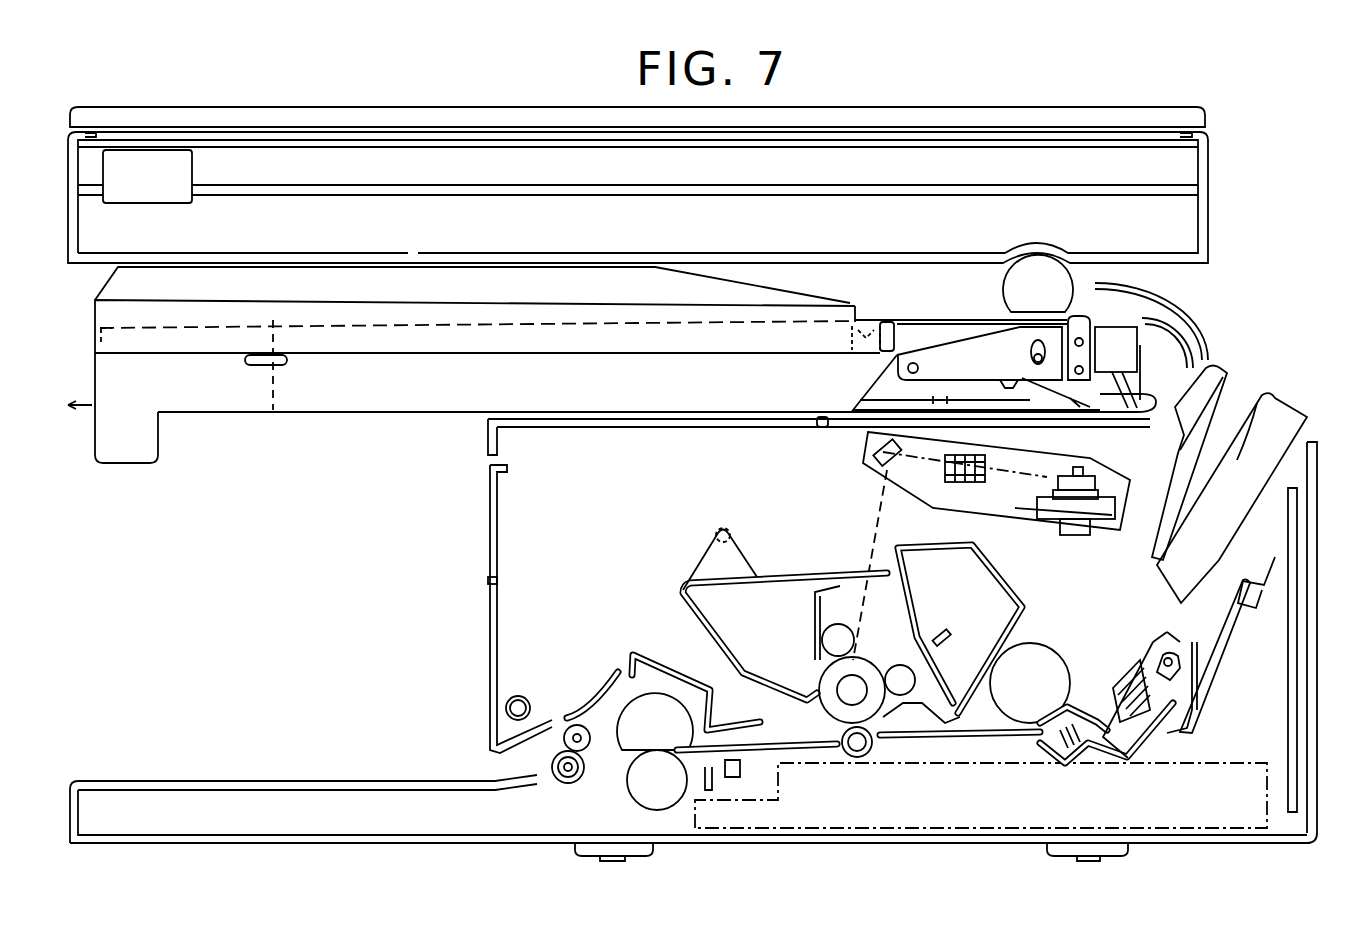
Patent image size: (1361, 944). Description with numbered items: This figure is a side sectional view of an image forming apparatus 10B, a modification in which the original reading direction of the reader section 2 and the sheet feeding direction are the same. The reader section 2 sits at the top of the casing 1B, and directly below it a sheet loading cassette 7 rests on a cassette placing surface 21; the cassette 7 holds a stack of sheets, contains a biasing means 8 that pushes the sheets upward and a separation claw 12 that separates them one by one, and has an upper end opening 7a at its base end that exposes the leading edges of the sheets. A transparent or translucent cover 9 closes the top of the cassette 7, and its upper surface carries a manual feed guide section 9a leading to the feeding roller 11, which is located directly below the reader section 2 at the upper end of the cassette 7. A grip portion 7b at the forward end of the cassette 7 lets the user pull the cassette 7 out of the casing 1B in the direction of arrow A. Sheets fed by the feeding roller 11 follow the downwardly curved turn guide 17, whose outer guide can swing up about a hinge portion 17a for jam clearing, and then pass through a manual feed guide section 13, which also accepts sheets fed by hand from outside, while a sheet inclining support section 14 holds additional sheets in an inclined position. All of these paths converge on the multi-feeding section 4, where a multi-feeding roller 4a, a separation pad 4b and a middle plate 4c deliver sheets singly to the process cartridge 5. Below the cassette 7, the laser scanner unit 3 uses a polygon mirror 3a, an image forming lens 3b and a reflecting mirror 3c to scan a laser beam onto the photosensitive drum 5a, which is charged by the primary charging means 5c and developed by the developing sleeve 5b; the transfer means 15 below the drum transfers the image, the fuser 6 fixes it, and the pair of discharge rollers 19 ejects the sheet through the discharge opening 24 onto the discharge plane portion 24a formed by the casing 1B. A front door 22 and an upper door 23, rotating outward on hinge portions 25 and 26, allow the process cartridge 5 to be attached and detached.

The casing 1B is at (1318, 650).
The reader section 2 is at (1188, 217).
The laser scanner unit 3 is at (1113, 482).
The polygon mirror 3a is at (1050, 505).
The image forming lens 3b is at (962, 480).
The reflecting mirror 3c is at (870, 450).
The multi-feeding section 4 is at (1103, 663).
The multi-feeding roller 4a is at (1005, 712).
The separation pad 4b is at (1045, 735).
The middle plate 4c is at (1180, 672).
The process cartridge 5 is at (787, 693).
The photosensitive drum 5a is at (830, 688).
The developing sleeve 5b is at (903, 667).
The primary charging means 5c is at (833, 632).
The fuser 6 is at (665, 800).
The sheet loading cassette 7 is at (233, 403).
The upper end opening 7a is at (1032, 323).
The grip portion 7b is at (123, 458).
The biasing means 8 is at (958, 357).
The cover 9 is at (112, 340).
The manual feed guide section 9a is at (100, 287).
The image forming apparatus 10B is at (840, 890).
The feeding roller 11 is at (1018, 283).
The separation claw 12 is at (1087, 320).
The manual feed guide section 13 is at (1220, 370).
The sheet inclining support section 14 is at (1305, 418).
The transfer means 15 is at (860, 760).
The turn guide 17 is at (1197, 323).
The hinge portion 17a is at (1183, 303).
The pair of discharge rollers 19 is at (548, 762).
The cassette placing surface 21 is at (690, 405).
The front door 22 is at (488, 510).
The upper door 23 is at (487, 446).
The discharge opening 24 is at (503, 778).
The discharge plane portion 24a is at (135, 780).
The hinge portion 25 is at (488, 580).
The hinge portion 26 is at (822, 428).